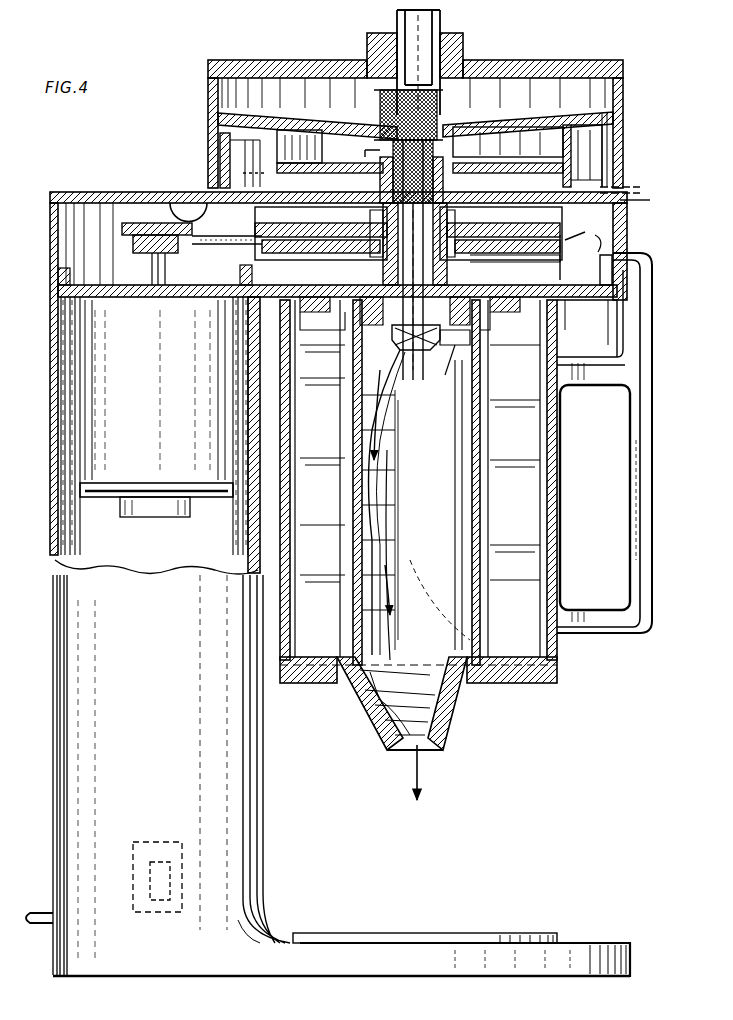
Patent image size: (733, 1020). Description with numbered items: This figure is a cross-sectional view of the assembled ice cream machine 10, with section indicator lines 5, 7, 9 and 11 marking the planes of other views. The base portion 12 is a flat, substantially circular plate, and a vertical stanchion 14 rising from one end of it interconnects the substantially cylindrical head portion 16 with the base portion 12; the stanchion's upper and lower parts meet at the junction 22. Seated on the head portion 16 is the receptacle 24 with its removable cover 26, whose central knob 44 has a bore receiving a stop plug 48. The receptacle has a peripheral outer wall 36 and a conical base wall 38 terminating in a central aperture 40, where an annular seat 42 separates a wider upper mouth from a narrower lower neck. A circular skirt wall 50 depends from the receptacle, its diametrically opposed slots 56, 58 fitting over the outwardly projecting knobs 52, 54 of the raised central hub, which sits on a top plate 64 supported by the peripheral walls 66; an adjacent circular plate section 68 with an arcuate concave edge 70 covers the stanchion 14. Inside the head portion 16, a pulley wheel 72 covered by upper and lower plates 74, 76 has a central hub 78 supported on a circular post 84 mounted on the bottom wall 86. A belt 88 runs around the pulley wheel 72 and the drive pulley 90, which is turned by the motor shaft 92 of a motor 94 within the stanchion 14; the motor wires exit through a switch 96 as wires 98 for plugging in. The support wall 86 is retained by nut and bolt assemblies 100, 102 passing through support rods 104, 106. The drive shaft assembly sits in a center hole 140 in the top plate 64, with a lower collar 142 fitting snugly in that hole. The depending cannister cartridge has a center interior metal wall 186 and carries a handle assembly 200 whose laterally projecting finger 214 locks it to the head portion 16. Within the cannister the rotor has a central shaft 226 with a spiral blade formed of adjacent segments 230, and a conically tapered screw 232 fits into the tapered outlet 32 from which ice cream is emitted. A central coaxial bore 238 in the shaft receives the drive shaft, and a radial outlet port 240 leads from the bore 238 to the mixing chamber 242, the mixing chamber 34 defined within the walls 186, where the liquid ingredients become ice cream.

The section line 5- 5 is at (450, 181).
The section line 7- 7 is at (208, 187).
The section line 9- 9 is at (48, 205).
The ice cream machine 10 is at (283, 486).
The section line 11- 11 is at (455, 385).
The base portion 12 is at (577, 943).
The vertical stanchion 14 is at (50, 346).
The head portion 16 is at (632, 187).
The junction 22 is at (58, 588).
The receptacle 24 is at (627, 72).
The removable cover 26 is at (558, 61).
The outlet 32 is at (432, 748).
The mixing chamber 34 is at (378, 586).
The peripheral outer wall 36 is at (208, 84).
The conical base wall 38 is at (285, 118).
The central aperture 40 is at (460, 124).
The annular seat 42 is at (392, 108).
The central knob 44 is at (464, 48).
The stop plug 48 is at (396, 25).
The circular skirt wall 50 is at (582, 156).
The outwardly projecting knob 52 is at (586, 155).
The outwardly projecting knob 54 is at (321, 233).
The slot 56 is at (560, 124).
The slot 58 is at (330, 151).
The top plate 64 is at (232, 170).
The peripheral walls 66 is at (633, 200).
The circular plate section 68 is at (97, 192).
The arcuate concave edge 70 is at (180, 196).
The pulley wheel 72 is at (556, 256).
The upper plate 74 is at (525, 232).
The lower plate 76 is at (500, 258).
The central hub 78 is at (501, 233).
The circular post 84 is at (383, 272).
The bottom wall 86 is at (300, 262).
The belt 88 is at (220, 248).
The drive pulley 90 is at (142, 222).
The motor shaft 92 is at (142, 265).
The motor 94 is at (80, 492).
The switch 96 is at (163, 840).
The wires 98 is at (37, 912).
The nut and bolt assembly 100 is at (60, 275).
The nut and bolt assembly 102 is at (252, 275).
The support rod 104 is at (68, 475).
The support rod 106 is at (247, 535).
The center hole 140 is at (375, 153).
The lower collar 142 is at (380, 188).
The center interior metal wall 186 is at (548, 492).
The handle assembly 200 is at (622, 492).
The laterally projecting finger 214 is at (587, 328).
The central shaft 226 is at (450, 432).
The adjacent segments 230 is at (372, 490).
The conically tapered screw 232 is at (372, 700).
The central coaxial bore 238 is at (410, 345).
The radial outlet port 240 is at (472, 340).
The mixing chamber 242 is at (460, 455).